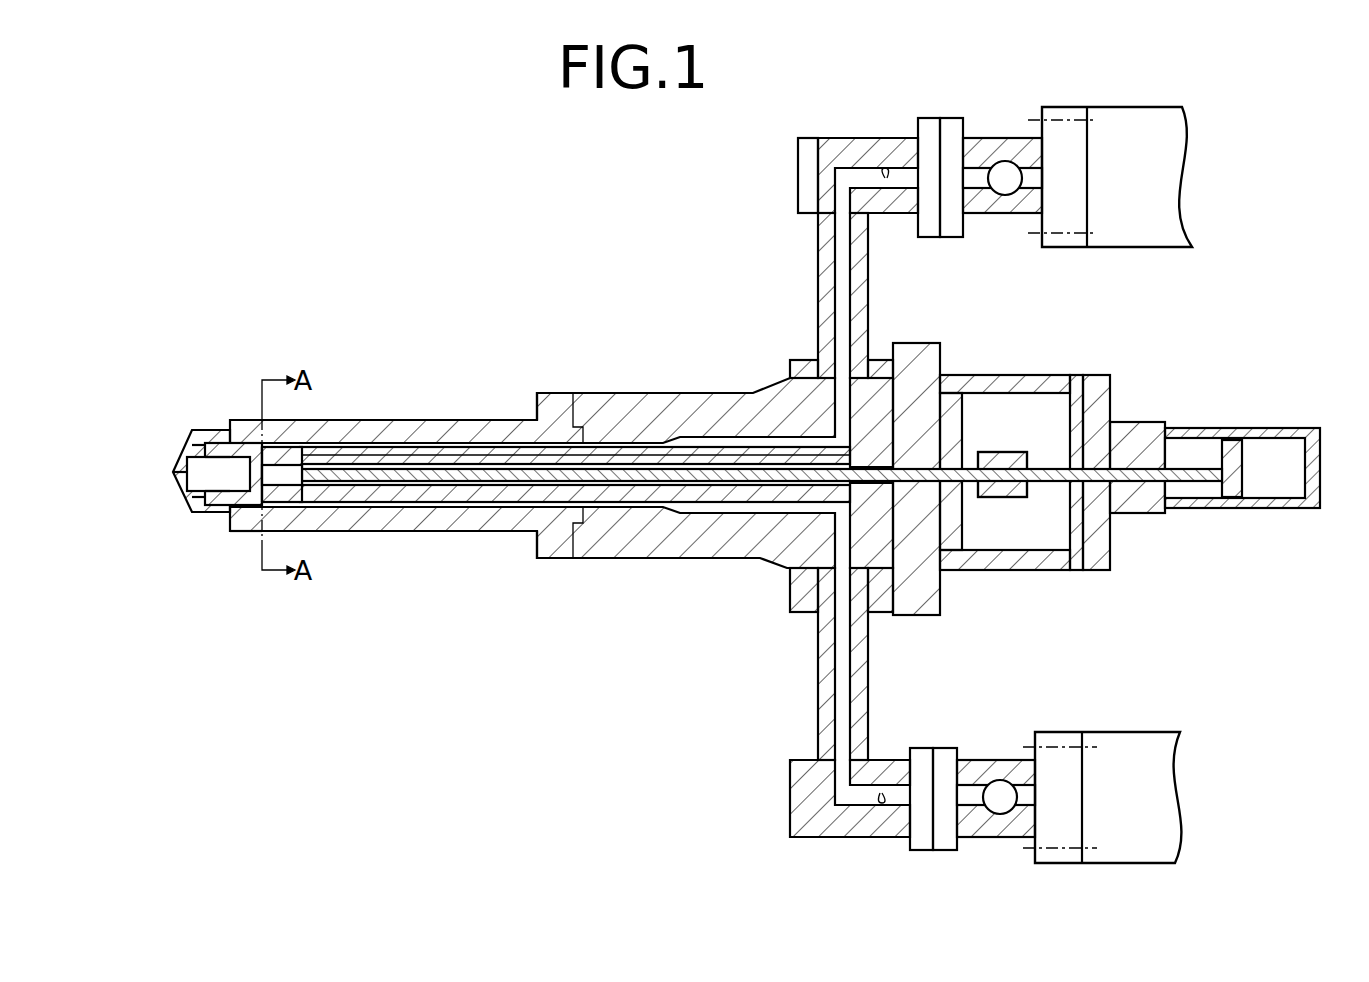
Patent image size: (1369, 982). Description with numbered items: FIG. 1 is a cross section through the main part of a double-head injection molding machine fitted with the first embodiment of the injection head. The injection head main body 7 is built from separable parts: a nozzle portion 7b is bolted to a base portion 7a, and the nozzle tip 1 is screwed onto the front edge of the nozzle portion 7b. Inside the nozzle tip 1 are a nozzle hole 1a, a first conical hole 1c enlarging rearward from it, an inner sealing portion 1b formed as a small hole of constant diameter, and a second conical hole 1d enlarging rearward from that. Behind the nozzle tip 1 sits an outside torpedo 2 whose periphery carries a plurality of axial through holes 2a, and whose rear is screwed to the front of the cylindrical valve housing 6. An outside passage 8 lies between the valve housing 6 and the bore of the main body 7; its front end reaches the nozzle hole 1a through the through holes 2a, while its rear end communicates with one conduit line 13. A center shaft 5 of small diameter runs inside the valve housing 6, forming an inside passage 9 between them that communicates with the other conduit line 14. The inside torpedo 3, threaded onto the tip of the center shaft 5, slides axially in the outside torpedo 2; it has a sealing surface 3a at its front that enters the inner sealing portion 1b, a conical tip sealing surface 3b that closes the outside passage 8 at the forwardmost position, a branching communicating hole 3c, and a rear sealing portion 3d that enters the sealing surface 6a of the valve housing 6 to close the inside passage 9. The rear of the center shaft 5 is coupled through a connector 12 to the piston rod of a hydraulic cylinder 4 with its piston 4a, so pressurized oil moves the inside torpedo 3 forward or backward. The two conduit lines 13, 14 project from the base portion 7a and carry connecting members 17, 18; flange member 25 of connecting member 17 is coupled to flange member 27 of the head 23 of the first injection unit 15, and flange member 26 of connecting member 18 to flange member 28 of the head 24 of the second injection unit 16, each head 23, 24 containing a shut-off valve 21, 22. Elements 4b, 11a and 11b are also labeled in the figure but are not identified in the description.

The nozzle tip 1 is at (193, 513).
The nozzle hole 1a is at (180, 474).
The inner sealing portion 1b is at (218, 493).
The first conical hole 1c is at (186, 458).
The second conical hole 1d is at (230, 420).
The outside torpedo 2 is at (217, 425).
The through holes 2a is at (280, 440).
The inside torpedo 3 is at (207, 445).
The sealing surface 3a is at (192, 445).
The conical tip sealing surface 3b is at (192, 497).
The communicating hole 3c is at (245, 533).
The sealing portion 3d is at (305, 503).
The hydraulic cylinder 4 is at (1213, 508).
The piston 4a is at (1247, 453).
The cylinder tube 4b is at (1182, 458).
The center shaft 5 is at (442, 482).
The valve housing 6 is at (652, 503).
The sealing surface 6a is at (350, 447).
The injection head main body 7 is at (513, 420).
The base portion 7a is at (603, 393).
The nozzle portion 7b is at (513, 532).
The outside passage 8 is at (467, 447).
The inside passage 9 is at (440, 455).
The upper passage 11a is at (889, 185).
The lower passage 11b is at (887, 790).
The connector 12 is at (1004, 452).
The conduit line 13 is at (818, 265).
The conduit line 14 is at (818, 717).
The first injection unit 15 is at (1185, 128).
The second injection unit 16 is at (1178, 850).
The connecting member 17 is at (798, 157).
The connecting member 18 is at (873, 758).
The shut-off valve 21 is at (1005, 160).
The shut-off valve 22 is at (1000, 816).
The head 23 is at (997, 214).
The head 24 is at (970, 838).
The flange member 25 is at (927, 120).
The flange member 26 is at (917, 850).
The flange member 27 is at (953, 118).
The flange member 28 is at (940, 748).